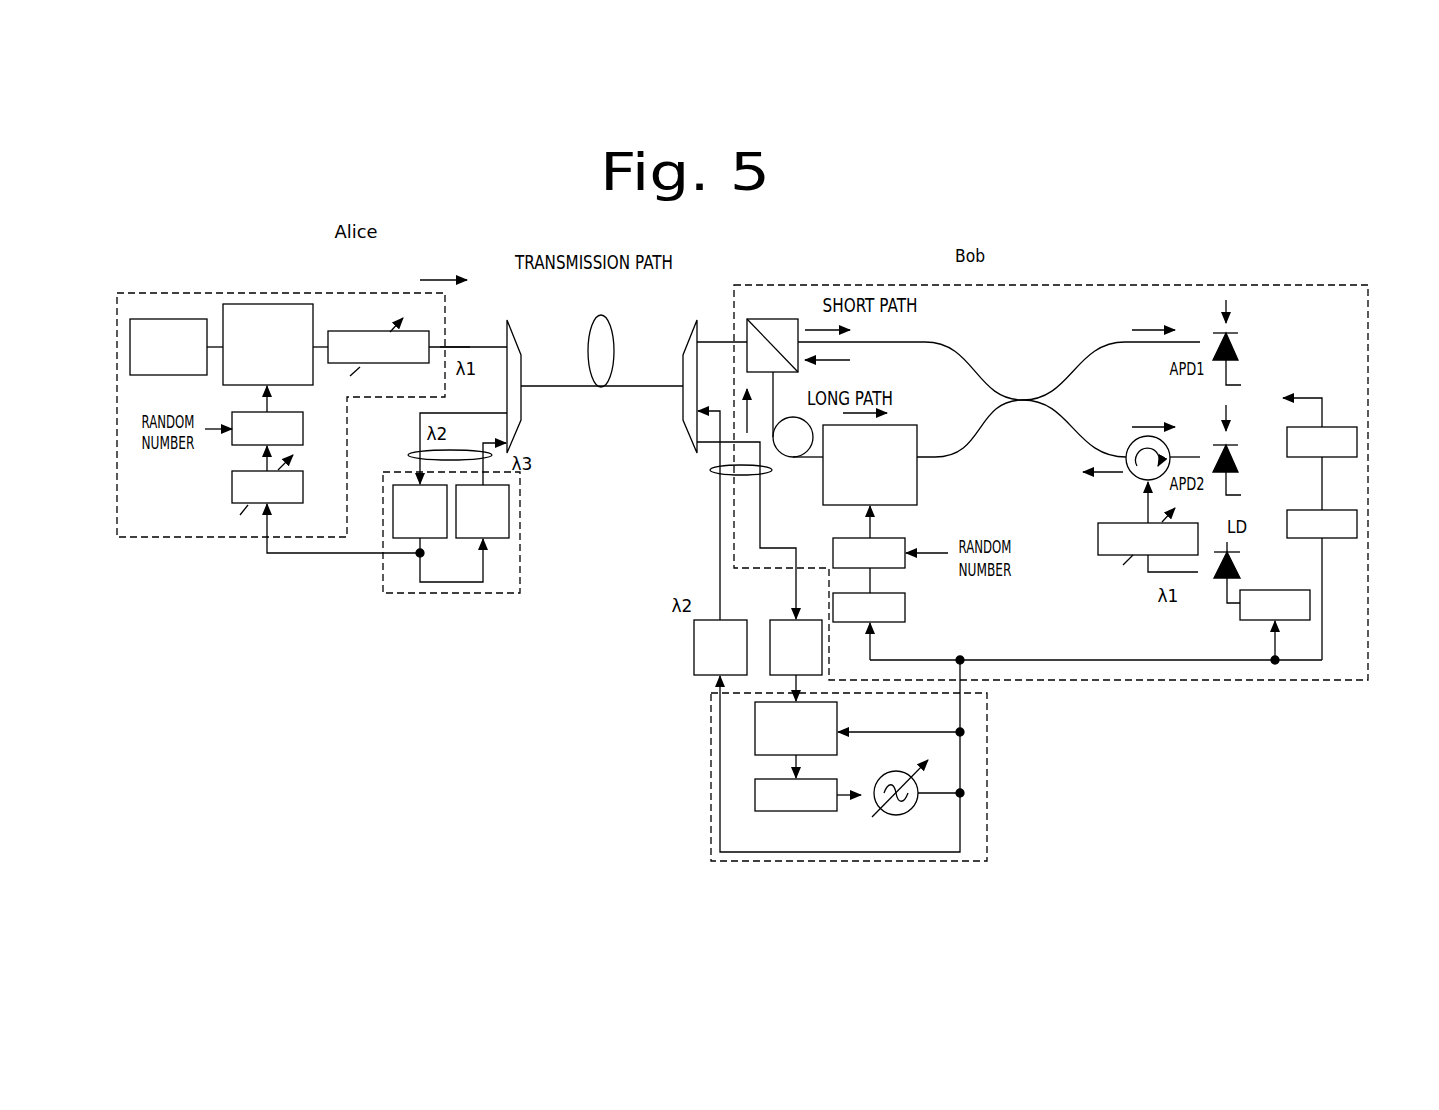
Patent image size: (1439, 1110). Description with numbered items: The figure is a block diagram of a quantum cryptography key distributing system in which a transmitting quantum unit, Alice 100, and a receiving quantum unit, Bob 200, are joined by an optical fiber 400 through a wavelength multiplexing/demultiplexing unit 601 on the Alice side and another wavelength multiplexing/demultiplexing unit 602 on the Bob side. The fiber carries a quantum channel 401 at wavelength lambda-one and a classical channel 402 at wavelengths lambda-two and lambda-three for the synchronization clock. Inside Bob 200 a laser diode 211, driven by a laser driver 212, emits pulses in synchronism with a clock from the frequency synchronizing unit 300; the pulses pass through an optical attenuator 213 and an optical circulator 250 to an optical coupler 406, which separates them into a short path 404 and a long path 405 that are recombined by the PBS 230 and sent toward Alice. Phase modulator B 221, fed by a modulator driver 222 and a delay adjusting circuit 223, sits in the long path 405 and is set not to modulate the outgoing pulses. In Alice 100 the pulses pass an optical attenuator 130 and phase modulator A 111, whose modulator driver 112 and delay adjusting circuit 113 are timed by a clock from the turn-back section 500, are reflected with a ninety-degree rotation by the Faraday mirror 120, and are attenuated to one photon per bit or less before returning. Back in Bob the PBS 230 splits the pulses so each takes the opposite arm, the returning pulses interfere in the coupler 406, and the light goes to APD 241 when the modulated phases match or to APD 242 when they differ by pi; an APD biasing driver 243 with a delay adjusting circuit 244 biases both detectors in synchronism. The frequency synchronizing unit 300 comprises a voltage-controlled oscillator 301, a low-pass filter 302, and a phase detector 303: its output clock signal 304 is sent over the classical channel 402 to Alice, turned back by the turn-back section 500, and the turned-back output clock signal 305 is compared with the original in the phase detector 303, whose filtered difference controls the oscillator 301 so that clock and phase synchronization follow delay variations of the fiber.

The quantum unit (Alice) 100 is at (217, 537).
The phase modulator A 111 is at (272, 304).
The modulator driver 112 is at (292, 412).
The delay adjusting circuit 113 is at (232, 487).
The Faraday mirror 120 is at (175, 319).
The optical attenuator 130 is at (360, 331).
The quantum unit (Bob) 200 is at (1320, 681).
The laser diode 211 is at (1219, 578).
The laser driver 212 is at (1265, 590).
The optical attenuator 213 is at (1098, 548).
The phase modulator B 221 is at (917, 490).
The modulator driver 222 is at (905, 565).
The delay adjusting circuit 223 is at (905, 617).
The polarization beam splitter 230 is at (797, 318).
The avalanche photodiode 241 is at (1238, 352).
The avalanche photodiode 242 is at (1238, 465).
The APD biasing driver 243 is at (1357, 440).
The delay adjusting circuit 244 is at (1357, 524).
The optical circulator 250 is at (1130, 478).
The frequency synchronizing unit 300 is at (711, 852).
The voltage-controlled oscillator 301 is at (905, 815).
The low-pass filter 302 is at (755, 795).
The phase detector 303 is at (755, 735).
The output clock signal 304 is at (720, 512).
The turned-back output clock signal 305 is at (775, 548).
The optical fiber 400 is at (632, 386).
The quantum channel 401 is at (456, 348).
The classical channel 402 is at (420, 452).
The short path 404 is at (955, 353).
The long path 405 is at (945, 447).
The optical coupler 406 is at (1018, 399).
The turn-back section 500 is at (487, 593).
The wavelength multiplexing/demultiplexing unit 601 is at (513, 335).
The wavelength multiplexing/demultiplexing unit 602 is at (688, 340).